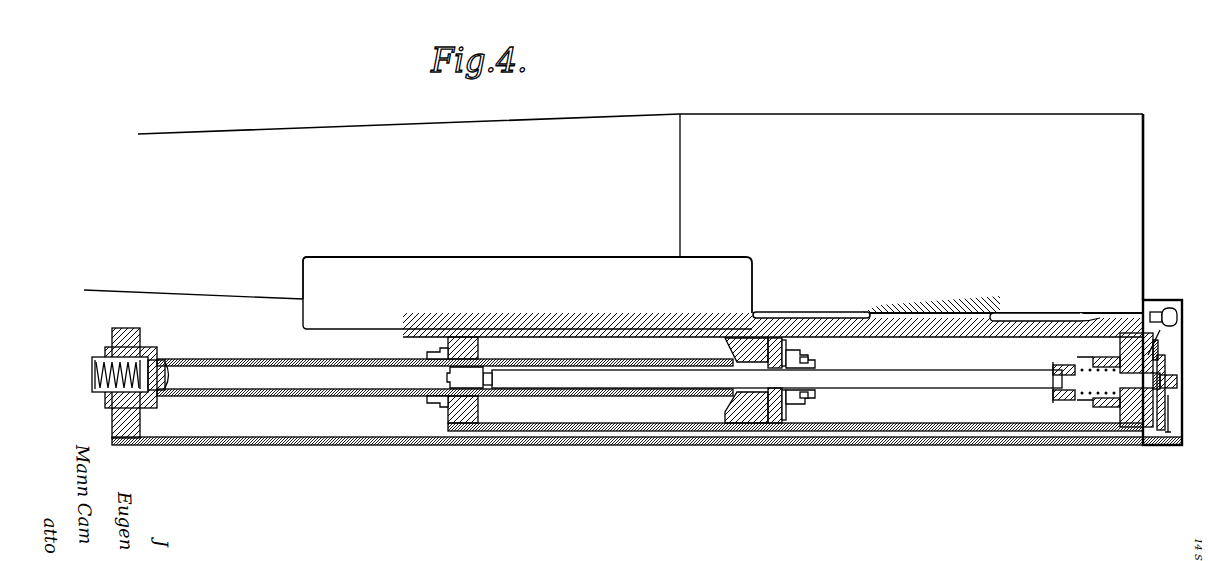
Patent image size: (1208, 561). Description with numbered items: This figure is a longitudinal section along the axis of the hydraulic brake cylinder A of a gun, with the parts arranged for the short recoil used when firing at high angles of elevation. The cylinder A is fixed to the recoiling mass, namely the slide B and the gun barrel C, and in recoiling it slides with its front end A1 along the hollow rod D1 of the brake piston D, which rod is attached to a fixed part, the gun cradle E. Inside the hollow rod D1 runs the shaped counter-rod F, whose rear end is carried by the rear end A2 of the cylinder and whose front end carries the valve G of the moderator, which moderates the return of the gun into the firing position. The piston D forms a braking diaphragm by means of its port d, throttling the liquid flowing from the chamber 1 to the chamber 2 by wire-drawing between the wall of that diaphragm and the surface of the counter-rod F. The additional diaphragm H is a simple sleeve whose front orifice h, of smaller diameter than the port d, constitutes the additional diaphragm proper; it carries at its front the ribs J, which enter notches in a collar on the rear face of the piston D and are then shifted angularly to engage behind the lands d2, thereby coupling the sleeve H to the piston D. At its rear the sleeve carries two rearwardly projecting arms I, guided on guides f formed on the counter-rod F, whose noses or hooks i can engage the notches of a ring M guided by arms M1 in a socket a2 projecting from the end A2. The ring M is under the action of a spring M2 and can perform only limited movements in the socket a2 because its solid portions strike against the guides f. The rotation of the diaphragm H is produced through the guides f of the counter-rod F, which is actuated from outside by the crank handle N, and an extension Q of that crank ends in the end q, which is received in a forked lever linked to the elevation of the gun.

The gun barrel C is at (1127, 229).
The slide B is at (557, 270).
The chamber 1 is at (561, 345).
The ribs J is at (778, 330).
The chamber 2 is at (932, 322).
The hydraulic brake cylinder A is at (968, 320).
The gun cradle E is at (117, 428).
The hollow rod D1 is at (269, 362).
The shaped counter-rod F is at (615, 383).
The front end of the cylinder A1 is at (472, 417).
The valve of the moderator G is at (448, 409).
The brake piston D is at (745, 432).
The port d is at (763, 326).
The front orifice h is at (757, 432).
The lands d2 is at (783, 330).
The additional diaphragm H is at (810, 332).
The arms I is at (826, 332).
The noses or hooks i is at (840, 332).
The ring M is at (1079, 320).
The arms M1 is at (1105, 320).
The spring M2 is at (1153, 313).
The guides f is at (1054, 335).
The socket a2 is at (1107, 407).
The rear end of the cylinder A2 is at (1147, 427).
The crank handle N is at (1151, 338).
The extension of the crank Q is at (1148, 433).
The end of the extension q is at (1166, 425).